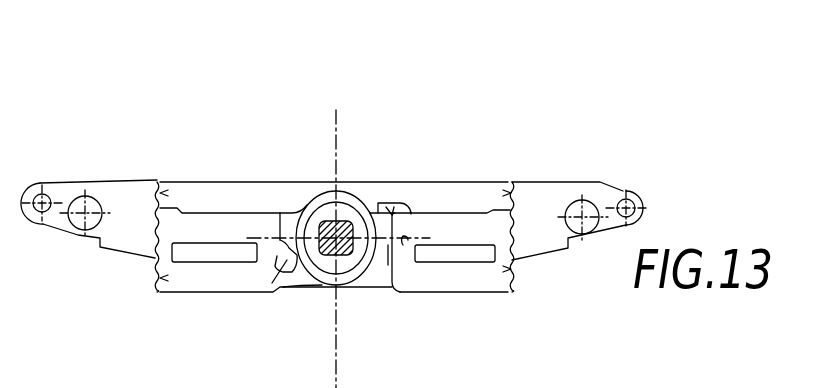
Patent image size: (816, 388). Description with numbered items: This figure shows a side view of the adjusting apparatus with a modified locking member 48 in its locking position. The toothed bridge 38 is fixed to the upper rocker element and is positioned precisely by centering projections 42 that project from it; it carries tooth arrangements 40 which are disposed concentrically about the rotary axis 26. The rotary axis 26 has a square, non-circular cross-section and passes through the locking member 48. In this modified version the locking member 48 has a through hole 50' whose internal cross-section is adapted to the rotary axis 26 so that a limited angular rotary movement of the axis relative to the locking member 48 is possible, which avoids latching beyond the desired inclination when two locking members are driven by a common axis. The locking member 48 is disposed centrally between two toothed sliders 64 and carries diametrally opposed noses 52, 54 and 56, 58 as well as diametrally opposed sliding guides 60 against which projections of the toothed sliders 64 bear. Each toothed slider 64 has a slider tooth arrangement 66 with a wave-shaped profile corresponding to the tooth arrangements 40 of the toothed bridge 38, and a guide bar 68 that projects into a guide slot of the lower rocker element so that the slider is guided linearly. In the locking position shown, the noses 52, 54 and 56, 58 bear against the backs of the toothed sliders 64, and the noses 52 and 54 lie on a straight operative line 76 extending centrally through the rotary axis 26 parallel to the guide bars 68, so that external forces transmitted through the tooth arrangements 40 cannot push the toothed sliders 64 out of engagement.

The rotary axis 26 is at (322, 222).
The toothed bridge 38 is at (70, 192).
The tooth arrangements 40 is at (177, 180).
The centering projections 42 is at (78, 222).
The locking member 48 is at (322, 277).
The through hole 50' is at (356, 183).
The nose 52 is at (392, 232).
The nose 54 is at (283, 242).
The nose 56 is at (390, 240).
The nose 58 is at (280, 215).
The sliding guides 60 is at (390, 205).
The toothed sliders 64 is at (214, 225).
The slider tooth arrangement 66 is at (160, 295).
The guide bar 68 is at (217, 257).
The operative line 76 is at (403, 245).